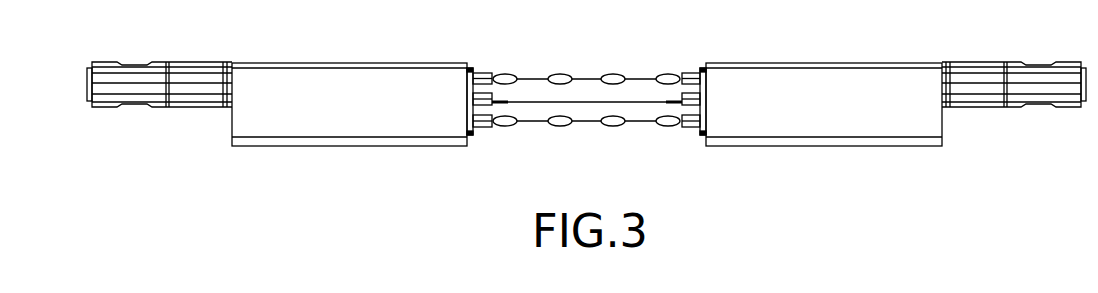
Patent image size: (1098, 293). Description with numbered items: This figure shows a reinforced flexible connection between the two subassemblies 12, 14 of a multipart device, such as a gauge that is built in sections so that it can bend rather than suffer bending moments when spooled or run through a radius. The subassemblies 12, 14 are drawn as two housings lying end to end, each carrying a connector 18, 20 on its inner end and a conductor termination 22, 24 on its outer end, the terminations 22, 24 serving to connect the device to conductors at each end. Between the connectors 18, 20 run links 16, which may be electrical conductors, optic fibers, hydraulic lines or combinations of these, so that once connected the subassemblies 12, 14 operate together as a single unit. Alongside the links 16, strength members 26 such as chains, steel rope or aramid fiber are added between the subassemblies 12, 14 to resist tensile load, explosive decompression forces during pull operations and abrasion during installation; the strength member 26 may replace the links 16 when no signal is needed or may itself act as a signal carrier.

The subassembly 12 is at (262, 122).
The subassembly 14 is at (910, 130).
The link 16 is at (538, 103).
The connector 18 is at (492, 74).
The connector 20 is at (668, 100).
The conductor termination 22 is at (232, 127).
The conductor termination 24 is at (942, 127).
The strength member 26 is at (588, 123).